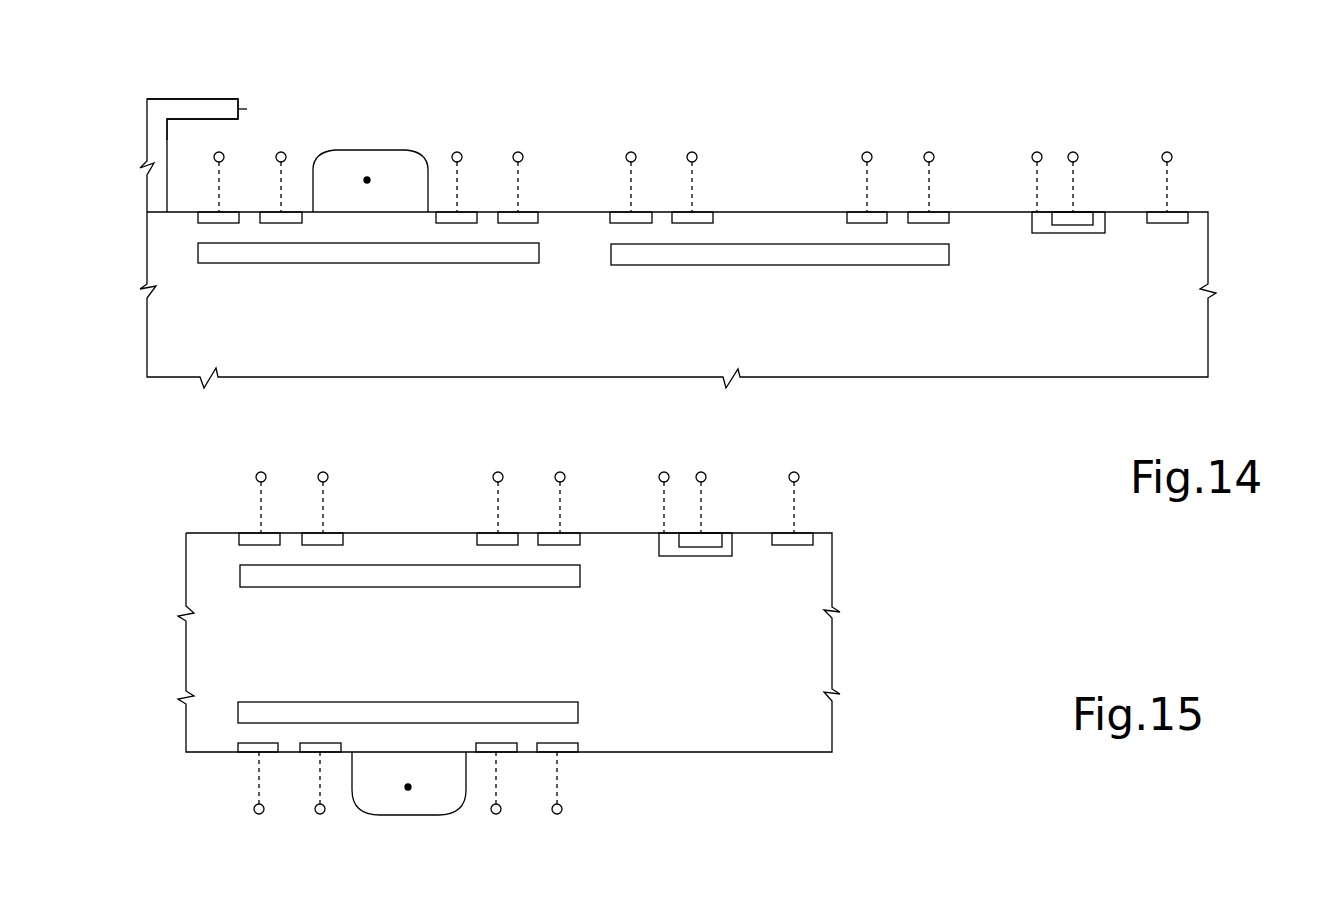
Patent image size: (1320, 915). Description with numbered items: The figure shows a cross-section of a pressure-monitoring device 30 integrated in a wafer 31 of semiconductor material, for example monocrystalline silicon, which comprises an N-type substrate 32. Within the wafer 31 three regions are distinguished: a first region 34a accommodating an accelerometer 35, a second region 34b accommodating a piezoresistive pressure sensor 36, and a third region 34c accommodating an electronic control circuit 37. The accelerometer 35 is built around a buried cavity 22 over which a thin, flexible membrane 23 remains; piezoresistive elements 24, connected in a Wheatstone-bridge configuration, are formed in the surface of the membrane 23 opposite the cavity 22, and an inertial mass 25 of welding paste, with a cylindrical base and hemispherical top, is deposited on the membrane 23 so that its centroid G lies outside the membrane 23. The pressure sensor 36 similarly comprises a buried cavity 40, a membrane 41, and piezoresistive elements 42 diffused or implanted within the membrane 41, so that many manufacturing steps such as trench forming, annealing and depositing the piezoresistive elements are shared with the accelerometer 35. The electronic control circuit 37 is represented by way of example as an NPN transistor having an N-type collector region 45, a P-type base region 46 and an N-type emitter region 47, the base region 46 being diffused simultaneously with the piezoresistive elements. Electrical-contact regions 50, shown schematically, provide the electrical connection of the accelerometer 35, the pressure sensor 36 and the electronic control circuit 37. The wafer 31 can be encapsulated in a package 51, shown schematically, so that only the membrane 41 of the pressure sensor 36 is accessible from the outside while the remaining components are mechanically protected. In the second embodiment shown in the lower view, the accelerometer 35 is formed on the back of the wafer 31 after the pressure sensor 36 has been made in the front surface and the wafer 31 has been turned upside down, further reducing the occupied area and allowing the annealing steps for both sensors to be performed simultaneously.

In FIG. 14, the buried cavity 22 is at (207, 253).
In FIG. 15, the buried cavity 22 is at (246, 710).
In FIG. 14, the membrane 23 is at (528, 235).
In FIG. 15, the membrane 23 is at (560, 732).
In FIG. 14, the piezoresistive elements 24 is at (206, 218).
In FIG. 15, the piezoresistive elements 24 is at (245, 752).
In FIG. 14, the inertial mass 25 is at (338, 165).
In FIG. 15, the inertial mass 25 is at (372, 793).
In FIG. 14, the pressure-monitoring device 30 is at (1240, 226).
In FIG. 15, the pressure-monitoring device 30 is at (905, 604).
In FIG. 14, the wafer 31 is at (1221, 328).
In FIG. 15, the wafer 31 is at (853, 657).
In FIG. 14, the substrate 32 is at (160, 342).
In FIG. 15, the substrate 32 is at (186, 636).
In FIG. 14, the first region 34a is at (320, 149).
In FIG. 15, the first region 34a is at (180, 739).
In FIG. 14, the second region 34b is at (669, 159).
In FIG. 15, the second region 34b is at (182, 548).
In FIG. 14, the third region 34c is at (1019, 208).
In FIG. 15, the third region 34c is at (808, 509).
In FIG. 14, the accelerometer 35 is at (487, 160).
In FIG. 15, the accelerometer 35 is at (284, 811).
In FIG. 14, the piezoresistive pressure sensor 36 is at (789, 176).
In FIG. 15, the piezoresistive pressure sensor 36 is at (441, 523).
In FIG. 14, the electronic control circuit 37 is at (1184, 197).
In FIG. 15, the electronic control circuit 37 is at (650, 523).
In FIG. 14, the buried cavity 40 is at (943, 253).
In FIG. 15, the buried cavity 40 is at (247, 576).
In FIG. 14, the membrane 41 is at (615, 233).
In FIG. 15, the membrane 41 is at (405, 552).
In FIG. 14, the piezoresistive elements 42 is at (706, 218).
In FIG. 15, the piezoresistive elements 42 is at (272, 540).
In FIG. 14, the collector region 45 is at (1160, 214).
In FIG. 15, the collector region 45 is at (805, 533).
In FIG. 14, the base region 46 is at (1040, 222).
In FIG. 15, the base region 46 is at (672, 545).
In FIG. 14, the emitter region 47 is at (1085, 218).
In FIG. 15, the emitter region 47 is at (712, 542).
In FIG. 14, the electrical-contact regions 50 is at (224, 157).
In FIG. 15, the electrical-contact regions 50 is at (499, 813).
In FIG. 14, the package 51 is at (152, 131).